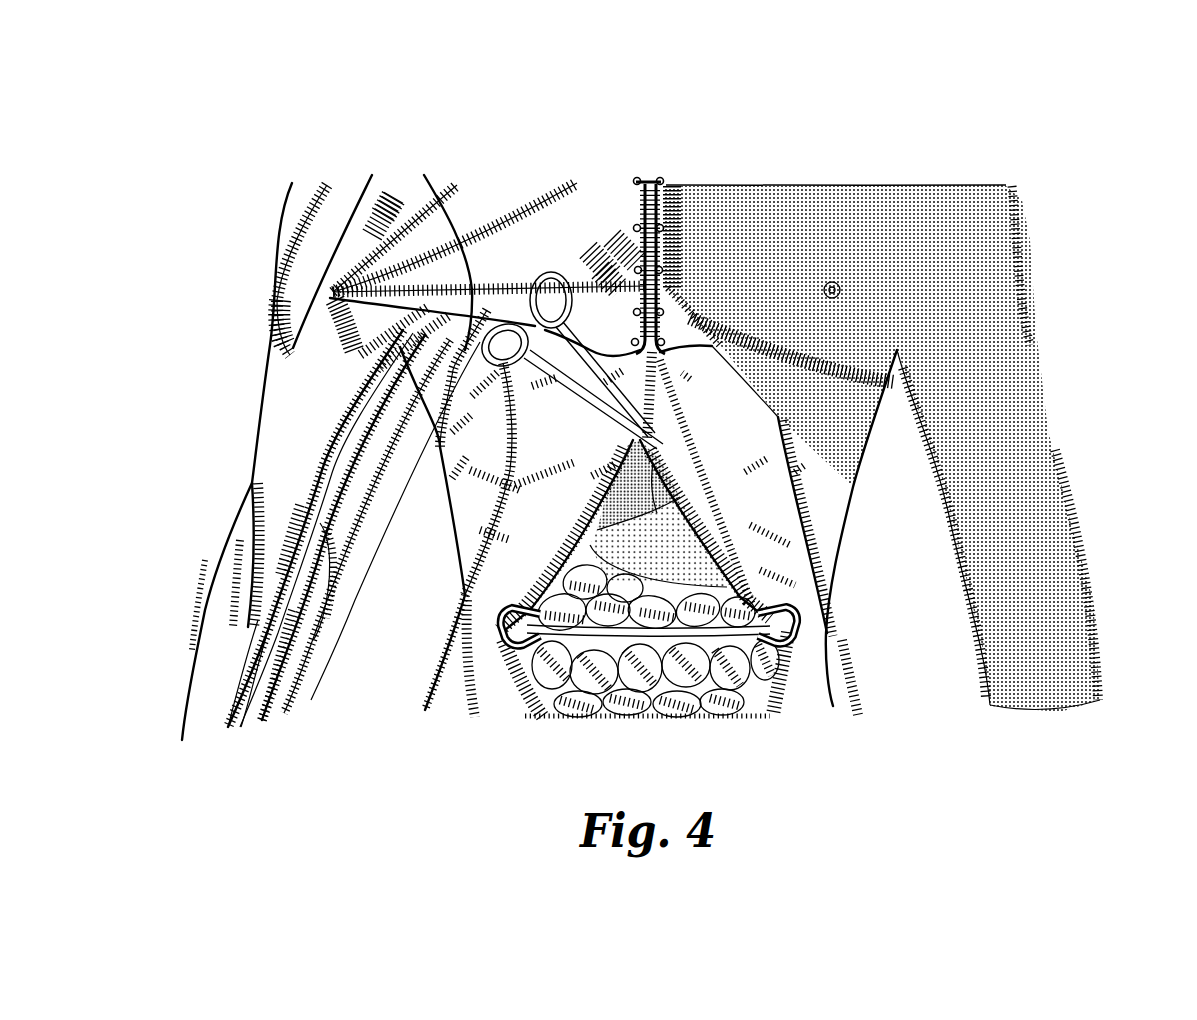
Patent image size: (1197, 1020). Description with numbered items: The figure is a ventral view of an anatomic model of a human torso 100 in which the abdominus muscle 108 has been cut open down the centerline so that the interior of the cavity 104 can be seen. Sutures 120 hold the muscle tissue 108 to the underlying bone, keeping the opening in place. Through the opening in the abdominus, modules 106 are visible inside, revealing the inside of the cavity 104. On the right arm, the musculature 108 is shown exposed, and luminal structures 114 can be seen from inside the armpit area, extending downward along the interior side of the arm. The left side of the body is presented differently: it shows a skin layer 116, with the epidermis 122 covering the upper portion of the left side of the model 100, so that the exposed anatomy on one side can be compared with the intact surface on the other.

The anatomic model of a human torso 100 is at (248, 105).
The cavity 104 is at (710, 712).
The modules 106 is at (582, 712).
The abdominus muscle 108 is at (545, 215).
The luminal structures 114 is at (262, 648).
The skin layer 116 is at (1058, 560).
The sutures 120 is at (668, 268).
The epidermis 122 is at (830, 213).